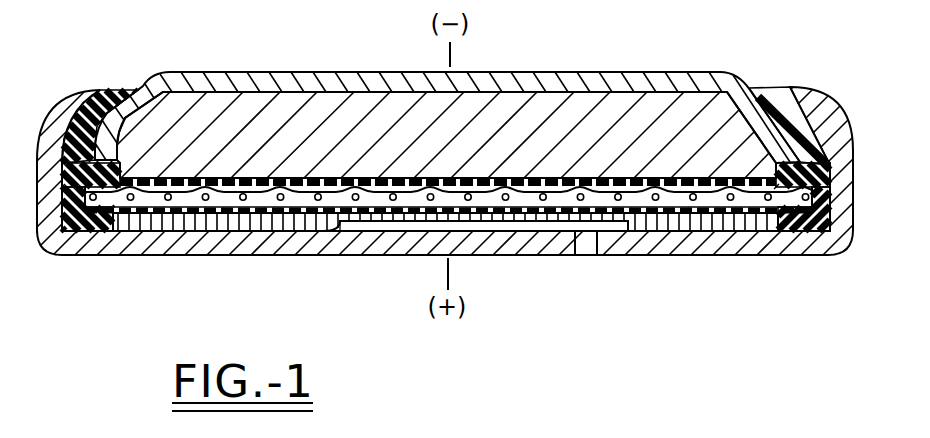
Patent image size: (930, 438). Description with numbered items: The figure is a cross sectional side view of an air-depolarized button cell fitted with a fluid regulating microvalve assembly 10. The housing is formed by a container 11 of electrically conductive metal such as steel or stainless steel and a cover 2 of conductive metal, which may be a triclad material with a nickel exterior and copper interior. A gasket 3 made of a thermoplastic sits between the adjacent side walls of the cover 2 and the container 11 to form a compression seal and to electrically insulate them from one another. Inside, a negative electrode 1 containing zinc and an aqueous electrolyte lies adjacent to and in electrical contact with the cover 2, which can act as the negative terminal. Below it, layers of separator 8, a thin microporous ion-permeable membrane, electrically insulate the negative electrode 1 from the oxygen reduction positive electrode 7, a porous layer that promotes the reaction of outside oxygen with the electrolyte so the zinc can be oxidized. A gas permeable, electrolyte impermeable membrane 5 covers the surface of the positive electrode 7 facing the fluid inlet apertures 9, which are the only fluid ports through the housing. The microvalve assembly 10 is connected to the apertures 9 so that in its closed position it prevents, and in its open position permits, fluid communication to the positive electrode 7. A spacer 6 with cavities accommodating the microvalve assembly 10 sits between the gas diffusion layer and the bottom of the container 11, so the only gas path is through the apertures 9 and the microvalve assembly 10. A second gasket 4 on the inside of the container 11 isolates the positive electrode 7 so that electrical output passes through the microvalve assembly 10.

The negative electrode 1 is at (277, 115).
The cover 2 is at (578, 68).
The gasket 3 is at (127, 93).
The second gasket 4 is at (90, 230).
The membrane 5 is at (692, 210).
The spacer 6 is at (155, 230).
The oxygen reduction positive electrode 7 is at (325, 192).
The separator 8 is at (377, 190).
The fluid inlet aperture 9 is at (586, 250).
The fluid regulating microvalve assembly 10 is at (408, 230).
The container 11 is at (227, 258).